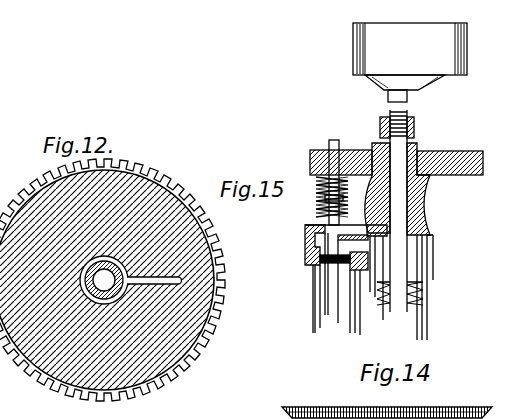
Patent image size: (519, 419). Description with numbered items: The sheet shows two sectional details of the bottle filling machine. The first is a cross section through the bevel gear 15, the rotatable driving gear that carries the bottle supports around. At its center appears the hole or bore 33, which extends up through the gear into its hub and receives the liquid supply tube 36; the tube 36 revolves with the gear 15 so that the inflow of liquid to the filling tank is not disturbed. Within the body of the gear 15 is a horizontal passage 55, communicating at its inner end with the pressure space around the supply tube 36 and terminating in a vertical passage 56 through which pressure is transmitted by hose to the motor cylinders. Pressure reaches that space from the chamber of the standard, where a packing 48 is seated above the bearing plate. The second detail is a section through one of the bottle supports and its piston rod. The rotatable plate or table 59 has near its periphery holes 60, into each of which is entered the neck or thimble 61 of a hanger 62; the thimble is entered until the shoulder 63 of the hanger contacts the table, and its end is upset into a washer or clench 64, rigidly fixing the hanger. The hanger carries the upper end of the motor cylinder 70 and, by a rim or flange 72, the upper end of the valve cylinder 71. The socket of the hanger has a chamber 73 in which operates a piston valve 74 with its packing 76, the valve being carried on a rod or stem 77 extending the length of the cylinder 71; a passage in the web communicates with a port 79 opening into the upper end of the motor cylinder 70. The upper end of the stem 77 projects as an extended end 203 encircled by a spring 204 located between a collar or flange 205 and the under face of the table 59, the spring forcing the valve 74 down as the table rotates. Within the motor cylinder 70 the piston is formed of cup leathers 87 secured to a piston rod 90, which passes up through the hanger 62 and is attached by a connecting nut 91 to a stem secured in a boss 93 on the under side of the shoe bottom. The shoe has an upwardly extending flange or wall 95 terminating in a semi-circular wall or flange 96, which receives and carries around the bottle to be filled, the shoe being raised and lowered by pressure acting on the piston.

In FIG. 12, the packing 48 is at (10, 33).
In FIG. 12, the bevel gear 15 is at (207, 333).
In FIG. 12, the horizontal passage 55 is at (163, 268).
In FIG. 12, the hole or bore 33 is at (97, 256).
In FIG. 12, the tube 36 is at (118, 258).
In FIG. 12, the vertical passage 56 is at (182, 279).
In FIG. 15, the flange or wall 95 is at (463, 43).
In FIG. 15, the semi-circular wall or flange 96 is at (355, 47).
In FIG. 15, the boss 93 is at (416, 88).
In FIG. 15, the piston rod 90 is at (400, 249).
In FIG. 15, the connecting nut 91 is at (414, 128).
In FIG. 15, the neck or thimble 61 is at (350, 148).
In FIG. 15, the plate or table 59 is at (322, 148).
In FIG. 15, the washer or clench 64 is at (434, 143).
In FIG. 15, the holes 60 is at (418, 162).
In FIG. 15, the shoulder 63 is at (427, 185).
In FIG. 15, the hanger 62 is at (421, 212).
In FIG. 15, the extended end 203 is at (323, 192).
In FIG. 15, the spring 204 is at (320, 205).
In FIG. 15, the collar or flange 205 is at (317, 222).
In FIG. 15, the chamber 73 is at (318, 248).
In FIG. 15, the piston valve 74 is at (320, 266).
In FIG. 15, the port 79 is at (348, 256).
In FIG. 15, the rim or flange 72 is at (315, 278).
In FIG. 15, the packing 76 is at (332, 298).
In FIG. 15, the rod or stem 77 is at (330, 305).
In FIG. 15, the cylinder 71 is at (320, 327).
In FIG. 15, the cup leathers 87 is at (425, 300).
In FIG. 15, the motor cylinder 70 is at (428, 322).